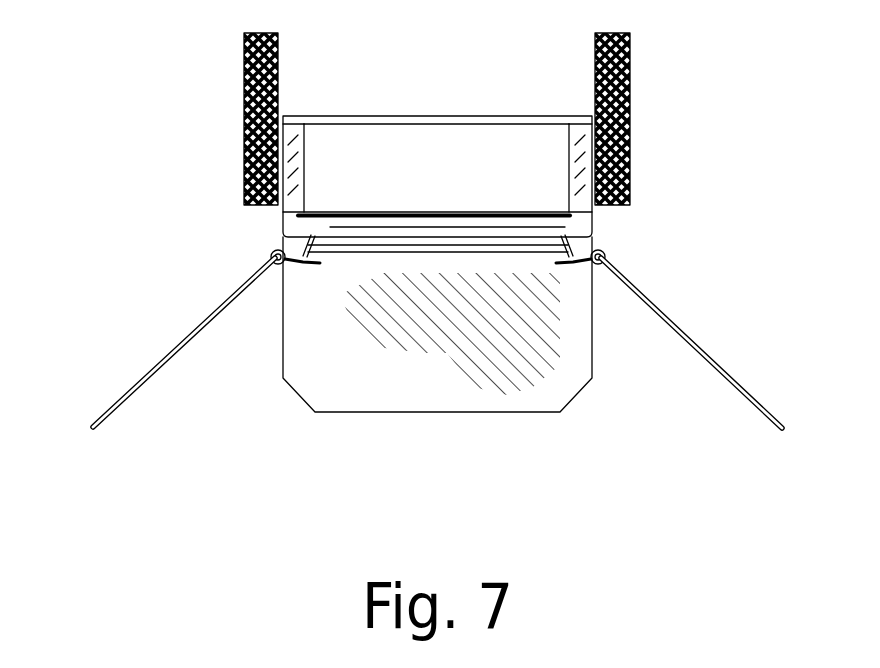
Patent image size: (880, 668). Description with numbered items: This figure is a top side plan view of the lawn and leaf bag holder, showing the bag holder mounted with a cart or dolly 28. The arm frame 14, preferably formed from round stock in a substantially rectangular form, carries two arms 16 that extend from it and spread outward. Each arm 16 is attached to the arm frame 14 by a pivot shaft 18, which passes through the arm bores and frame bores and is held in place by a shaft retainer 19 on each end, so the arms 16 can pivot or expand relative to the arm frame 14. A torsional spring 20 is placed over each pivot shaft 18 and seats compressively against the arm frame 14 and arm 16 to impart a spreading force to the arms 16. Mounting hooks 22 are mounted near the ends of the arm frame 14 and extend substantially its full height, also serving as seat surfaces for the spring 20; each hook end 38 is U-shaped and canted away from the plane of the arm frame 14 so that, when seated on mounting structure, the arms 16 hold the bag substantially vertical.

The arm frame 14 is at (440, 250).
The arm 16 is at (130, 390).
The pivot shaft 18 is at (448, 369).
The shaft retainer 19 is at (280, 263).
The spring 20 is at (266, 265).
The mounting hook 22 is at (445, 215).
The cart or dolly 28 is at (422, 117).
The hook end 38 is at (283, 240).